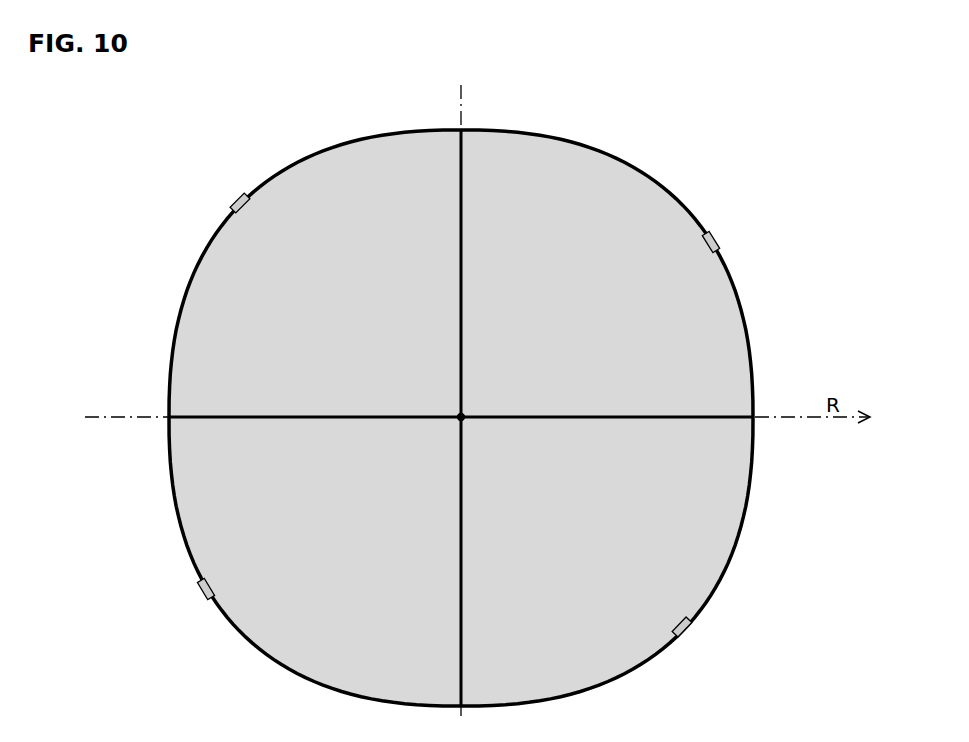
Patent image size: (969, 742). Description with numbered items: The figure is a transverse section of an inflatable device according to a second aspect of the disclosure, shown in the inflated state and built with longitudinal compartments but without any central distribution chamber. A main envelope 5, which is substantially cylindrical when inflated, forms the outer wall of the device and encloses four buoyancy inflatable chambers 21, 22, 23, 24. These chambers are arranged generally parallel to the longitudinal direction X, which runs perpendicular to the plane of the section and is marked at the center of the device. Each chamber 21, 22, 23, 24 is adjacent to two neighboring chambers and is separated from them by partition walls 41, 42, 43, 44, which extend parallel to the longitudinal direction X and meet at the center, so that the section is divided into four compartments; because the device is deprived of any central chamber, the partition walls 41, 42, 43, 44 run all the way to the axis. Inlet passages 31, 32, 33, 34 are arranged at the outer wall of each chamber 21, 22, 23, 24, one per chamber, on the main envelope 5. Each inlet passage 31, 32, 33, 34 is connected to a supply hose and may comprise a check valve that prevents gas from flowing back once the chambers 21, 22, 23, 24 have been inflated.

The main envelope 5 is at (738, 293).
The buoyancy inflatable chamber 21 is at (617, 326).
The buoyancy inflatable chamber 22 is at (578, 579).
The buoyancy inflatable chamber 23 is at (316, 557).
The buoyancy inflatable chamber 24 is at (356, 279).
The inlet passage 31 is at (714, 238).
The inlet passage 32 is at (690, 626).
The inlet passage 33 is at (200, 591).
The inlet passage 34 is at (236, 199).
The partition wall 41 is at (622, 416).
The partition wall 42 is at (461, 645).
The partition wall 43 is at (250, 416).
The partition wall 44 is at (462, 267).
The longitudinal direction X is at (464, 415).